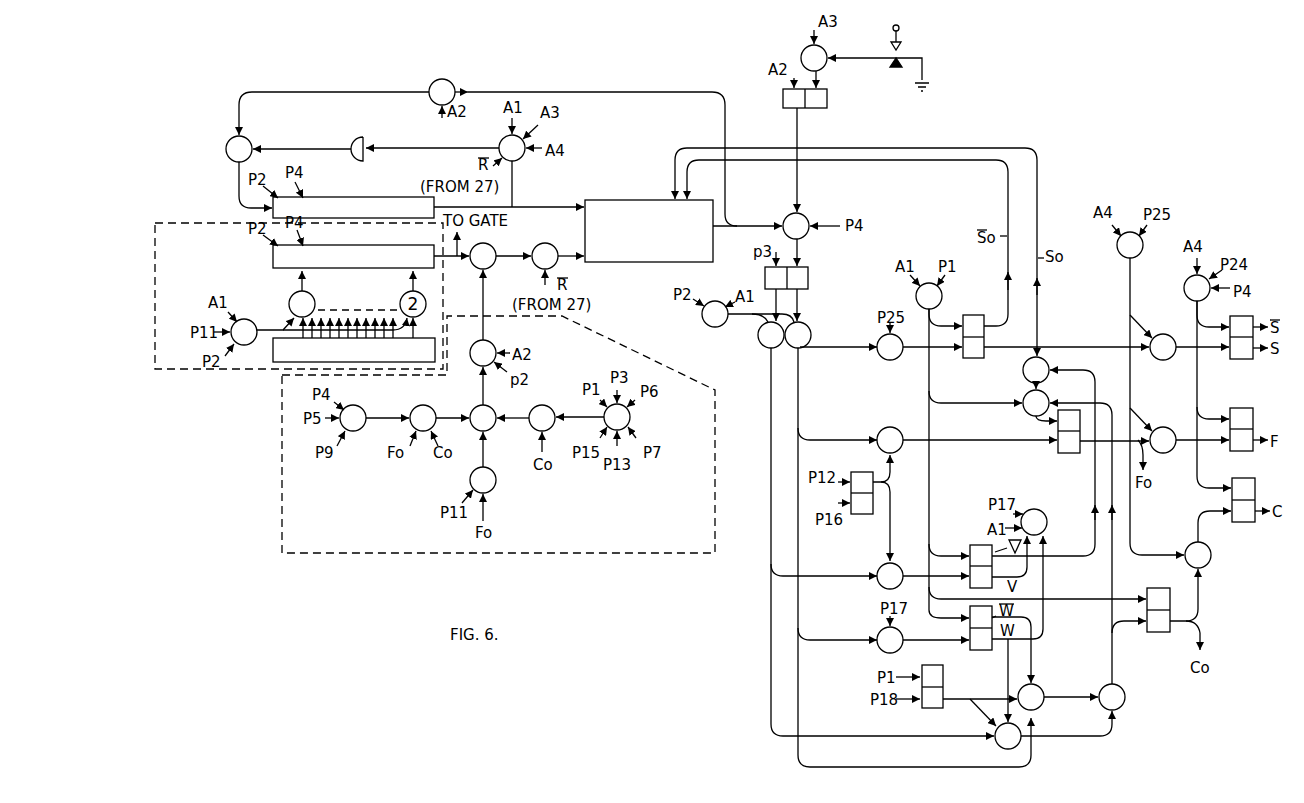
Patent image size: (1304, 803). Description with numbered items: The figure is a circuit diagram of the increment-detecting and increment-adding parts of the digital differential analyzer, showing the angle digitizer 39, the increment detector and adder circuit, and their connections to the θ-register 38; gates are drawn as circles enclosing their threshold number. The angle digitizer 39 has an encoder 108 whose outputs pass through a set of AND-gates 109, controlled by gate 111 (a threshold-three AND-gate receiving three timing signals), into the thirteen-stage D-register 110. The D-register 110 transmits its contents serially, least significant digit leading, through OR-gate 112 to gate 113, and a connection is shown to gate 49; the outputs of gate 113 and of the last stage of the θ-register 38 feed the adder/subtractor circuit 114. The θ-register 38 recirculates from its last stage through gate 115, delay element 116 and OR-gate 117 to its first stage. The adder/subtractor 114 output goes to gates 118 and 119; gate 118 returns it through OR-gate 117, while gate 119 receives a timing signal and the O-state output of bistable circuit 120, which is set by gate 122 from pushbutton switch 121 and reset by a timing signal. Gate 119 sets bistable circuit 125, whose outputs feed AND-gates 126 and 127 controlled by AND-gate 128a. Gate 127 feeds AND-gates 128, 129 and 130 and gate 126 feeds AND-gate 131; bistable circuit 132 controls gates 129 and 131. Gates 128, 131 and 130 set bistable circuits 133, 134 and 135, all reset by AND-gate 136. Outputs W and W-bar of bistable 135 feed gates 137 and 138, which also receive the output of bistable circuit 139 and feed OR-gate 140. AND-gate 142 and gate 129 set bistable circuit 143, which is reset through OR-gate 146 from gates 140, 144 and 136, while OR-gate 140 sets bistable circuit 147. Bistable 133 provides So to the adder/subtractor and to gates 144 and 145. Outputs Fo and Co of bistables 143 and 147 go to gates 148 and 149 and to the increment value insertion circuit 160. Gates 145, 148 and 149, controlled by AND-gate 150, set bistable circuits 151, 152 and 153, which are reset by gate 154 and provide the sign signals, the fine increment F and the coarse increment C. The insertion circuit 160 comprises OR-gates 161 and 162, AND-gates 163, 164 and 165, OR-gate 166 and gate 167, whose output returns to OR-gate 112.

The θ-register 38 is at (372, 197).
The angle digitizer 39 is at (198, 222).
The gate 49 is at (483, 242).
The encoder 108 is at (275, 352).
The set of AND-gates 109 is at (290, 302).
The D-register 110 is at (273, 260).
The gate 111 is at (259, 329).
The OR-gate 112 is at (478, 268).
The gate 113 is at (545, 243).
The adder/subtractor circuit 114 is at (635, 198).
The gate 115 is at (500, 141).
The delay element 116 is at (367, 141).
The OR-gate 117 is at (250, 145).
The gate 118 is at (432, 102).
The gate 119 is at (806, 221).
The bistable circuit 120 is at (827, 98).
The pushbutton switch 121 is at (904, 52).
The gate 122 is at (826, 50).
The bistable circuit 125 is at (810, 266).
The AND-gate 126 is at (765, 347).
The AND-gate 127 is at (807, 327).
The AND-gate 128 is at (897, 361).
The AND-gate 128a is at (707, 324).
The AND-gate 129 is at (886, 432).
The AND-gate 130 is at (878, 634).
The AND-gate 131 is at (883, 567).
The bistable circuit 132 is at (862, 472).
The bistable circuit 133 is at (971, 314).
The bistable circuit 134 is at (969, 545).
The bistable circuit 135 is at (980, 651).
The AND-gate 136 is at (916, 296).
The gate 137 is at (1000, 748).
The gate 138 is at (1041, 690).
The bistable circuit 139 is at (923, 709).
The OR-gate 140 is at (1125, 691).
The AND-gate 142 is at (1045, 515).
The bistable circuit 143 is at (1068, 453).
The AND-gate 144 is at (1023, 371).
The AND-gate 145 is at (1163, 360).
The OR-gate 146 is at (1025, 414).
The bistable circuit 147 is at (1158, 633).
The gate 148 is at (1170, 453).
The gate 149 is at (1212, 560).
The AND-gate 150 is at (1140, 253).
The bistable circuit 151 is at (1245, 360).
The bistable circuit 152 is at (1243, 452).
The bistable circuit 153 is at (1243, 523).
The gate 154 is at (1188, 298).
The increment value insertion circuit 160 is at (605, 556).
The OR-gate 161 is at (362, 410).
The OR-gate 162 is at (630, 417).
The AND-gate 163 is at (438, 400).
The AND-gate 164 is at (548, 400).
The AND-gate 165 is at (494, 488).
The OR-gate 166 is at (490, 430).
The gate 167 is at (478, 342).